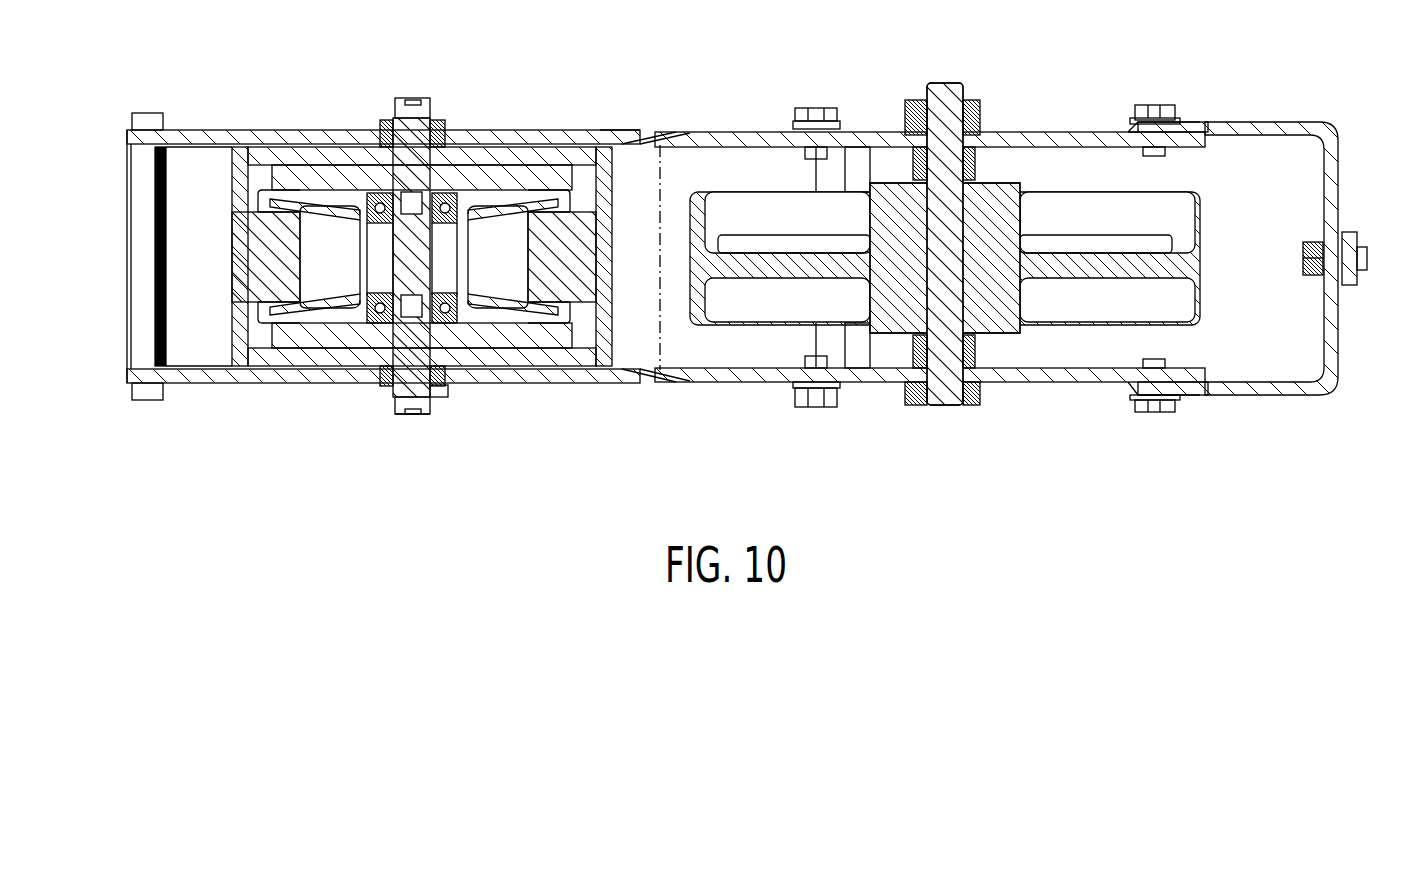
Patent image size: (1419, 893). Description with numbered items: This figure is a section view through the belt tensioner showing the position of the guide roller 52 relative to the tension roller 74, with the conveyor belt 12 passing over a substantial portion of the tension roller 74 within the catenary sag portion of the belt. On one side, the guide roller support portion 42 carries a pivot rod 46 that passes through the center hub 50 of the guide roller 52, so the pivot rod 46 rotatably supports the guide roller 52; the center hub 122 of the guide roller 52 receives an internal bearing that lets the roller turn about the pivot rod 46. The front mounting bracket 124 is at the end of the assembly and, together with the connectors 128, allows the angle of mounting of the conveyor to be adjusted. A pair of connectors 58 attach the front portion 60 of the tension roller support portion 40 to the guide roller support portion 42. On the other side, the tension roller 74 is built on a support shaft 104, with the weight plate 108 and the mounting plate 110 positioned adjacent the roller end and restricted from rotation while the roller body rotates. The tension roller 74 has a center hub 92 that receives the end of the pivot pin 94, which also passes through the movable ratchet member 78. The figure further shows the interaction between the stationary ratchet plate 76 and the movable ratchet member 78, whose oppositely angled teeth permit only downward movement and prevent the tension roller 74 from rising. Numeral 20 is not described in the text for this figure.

The conveyor belt 12 is at (248, 263).
The hub 20 is at (295, 255).
The tension roller support portion 40 is at (589, 194).
The guide roller support portion 42 is at (1072, 134).
The pivot rod 46 is at (950, 212).
The center hub 50 is at (910, 155).
The guide roller 52 is at (1208, 227).
The connectors 58 is at (815, 107).
The front portion 60 is at (738, 132).
The tension roller 74 is at (632, 140).
The stationary ratchet plate 76 is at (272, 130).
The movable ratchet member 78 is at (373, 130).
The center hub 92 is at (436, 397).
The pivot pin 94 is at (423, 416).
The support shaft 104 is at (422, 258).
The weight plate 108 is at (457, 175).
The mounting plate 110 is at (505, 160).
The center hub 122 is at (1002, 315).
The front mounting bracket 124 is at (1332, 190).
The connectors 128 is at (1160, 105).